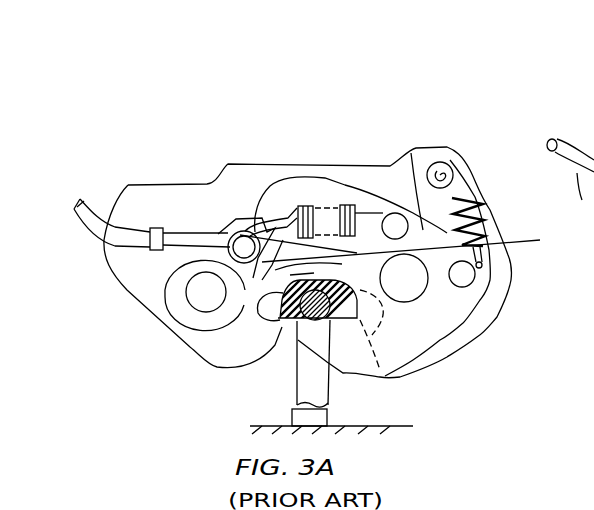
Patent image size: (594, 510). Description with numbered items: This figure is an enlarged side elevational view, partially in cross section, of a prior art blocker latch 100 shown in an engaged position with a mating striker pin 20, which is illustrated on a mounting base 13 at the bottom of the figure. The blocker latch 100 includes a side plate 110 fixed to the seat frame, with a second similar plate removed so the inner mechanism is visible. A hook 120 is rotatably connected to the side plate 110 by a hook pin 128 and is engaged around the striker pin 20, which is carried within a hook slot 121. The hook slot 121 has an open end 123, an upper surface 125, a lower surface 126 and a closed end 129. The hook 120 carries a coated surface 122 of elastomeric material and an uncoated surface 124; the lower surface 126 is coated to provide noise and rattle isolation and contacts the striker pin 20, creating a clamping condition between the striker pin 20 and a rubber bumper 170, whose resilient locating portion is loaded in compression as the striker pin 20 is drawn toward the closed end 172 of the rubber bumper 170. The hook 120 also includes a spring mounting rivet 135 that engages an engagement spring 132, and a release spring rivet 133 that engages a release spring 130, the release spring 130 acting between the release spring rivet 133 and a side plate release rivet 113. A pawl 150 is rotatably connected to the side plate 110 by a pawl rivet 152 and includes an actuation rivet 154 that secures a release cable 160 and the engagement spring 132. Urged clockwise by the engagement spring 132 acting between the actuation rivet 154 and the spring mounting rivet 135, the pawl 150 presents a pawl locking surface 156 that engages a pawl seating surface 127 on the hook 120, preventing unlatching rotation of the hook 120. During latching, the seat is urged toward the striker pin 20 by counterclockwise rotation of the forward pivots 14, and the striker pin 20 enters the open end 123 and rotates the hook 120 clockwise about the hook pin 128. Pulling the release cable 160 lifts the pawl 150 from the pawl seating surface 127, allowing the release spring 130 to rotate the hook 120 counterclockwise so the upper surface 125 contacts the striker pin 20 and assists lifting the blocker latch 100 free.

The blocker latch 100 is at (146, 325).
The side plate 110 is at (217, 364).
The side plate release rivet 113 is at (451, 157).
The hook 120 is at (457, 339).
The hook slot 121 is at (364, 306).
The coated surface 122 is at (443, 313).
The open end 123 is at (297, 325).
The uncoated surface 124 is at (403, 153).
The upper surface 125 is at (280, 269).
The lower surface 126 is at (333, 322).
The pawl seating surface 127 is at (256, 204).
The hook pin 128 is at (408, 287).
The closed end 129 is at (353, 290).
The release spring 130 is at (510, 245).
The engagement spring 132 is at (292, 205).
The release spring rivet 133 is at (466, 278).
The spring mounting rivet 135 is at (392, 223).
The pawl 150 is at (207, 323).
The pawl rivet 152 is at (196, 293).
The actuation rivet 154 is at (230, 238).
The pawl locking surface 156 is at (245, 318).
The release cable 160 is at (180, 222).
The rubber bumper 170 is at (282, 328).
The closed end 172 is at (340, 229).
The striker pin 20 is at (329, 389).
The ground block 13 is at (344, 426).
The forward pivots 14 is at (593, 150).